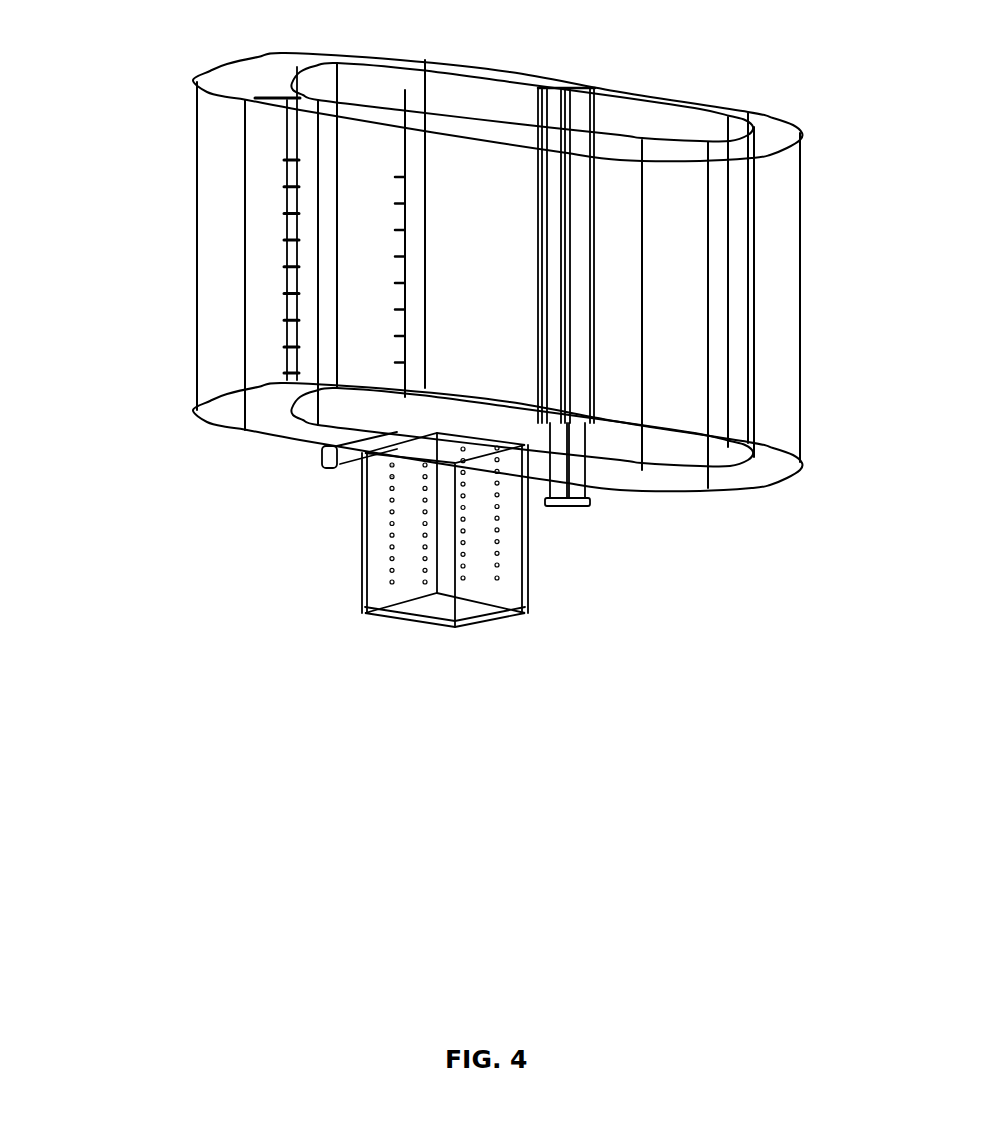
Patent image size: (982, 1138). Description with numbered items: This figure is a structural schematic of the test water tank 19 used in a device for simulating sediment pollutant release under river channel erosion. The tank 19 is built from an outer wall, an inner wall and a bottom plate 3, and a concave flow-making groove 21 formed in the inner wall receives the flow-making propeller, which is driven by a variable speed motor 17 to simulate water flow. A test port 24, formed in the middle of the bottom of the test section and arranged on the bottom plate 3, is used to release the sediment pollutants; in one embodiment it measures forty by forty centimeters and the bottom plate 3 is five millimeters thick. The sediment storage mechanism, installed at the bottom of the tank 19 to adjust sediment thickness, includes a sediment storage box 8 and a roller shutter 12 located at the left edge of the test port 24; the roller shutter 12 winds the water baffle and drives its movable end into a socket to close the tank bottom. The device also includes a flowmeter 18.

The bottom plate 3 is at (265, 418).
The sediment storage box 8 is at (363, 555).
The roller shutter 12 is at (323, 470).
The variable speed motor 17 is at (577, 503).
The flowmeter 18 is at (260, 100).
The test water tank 19 is at (195, 162).
The flow-making groove 21 is at (578, 118).
The test port 24 is at (450, 450).